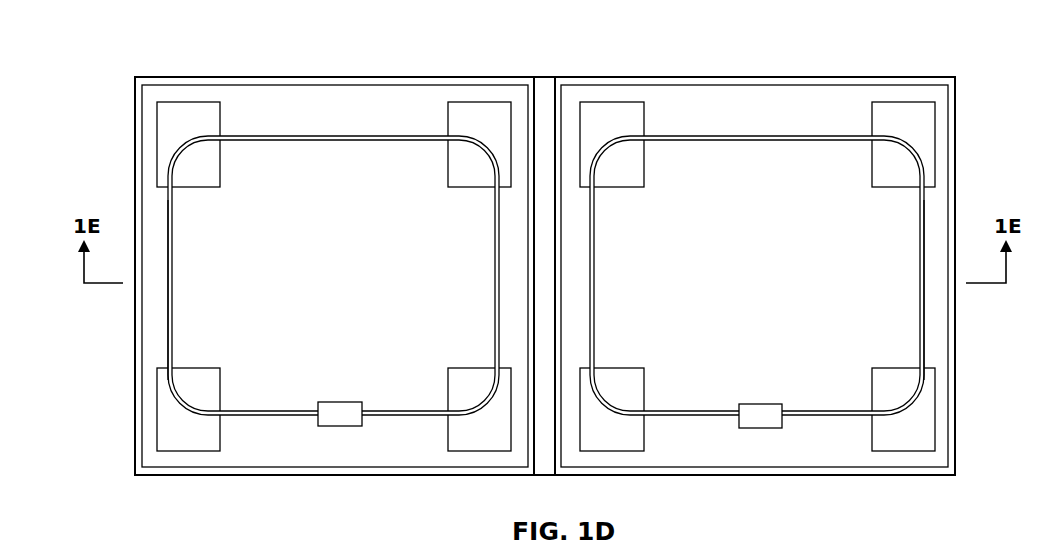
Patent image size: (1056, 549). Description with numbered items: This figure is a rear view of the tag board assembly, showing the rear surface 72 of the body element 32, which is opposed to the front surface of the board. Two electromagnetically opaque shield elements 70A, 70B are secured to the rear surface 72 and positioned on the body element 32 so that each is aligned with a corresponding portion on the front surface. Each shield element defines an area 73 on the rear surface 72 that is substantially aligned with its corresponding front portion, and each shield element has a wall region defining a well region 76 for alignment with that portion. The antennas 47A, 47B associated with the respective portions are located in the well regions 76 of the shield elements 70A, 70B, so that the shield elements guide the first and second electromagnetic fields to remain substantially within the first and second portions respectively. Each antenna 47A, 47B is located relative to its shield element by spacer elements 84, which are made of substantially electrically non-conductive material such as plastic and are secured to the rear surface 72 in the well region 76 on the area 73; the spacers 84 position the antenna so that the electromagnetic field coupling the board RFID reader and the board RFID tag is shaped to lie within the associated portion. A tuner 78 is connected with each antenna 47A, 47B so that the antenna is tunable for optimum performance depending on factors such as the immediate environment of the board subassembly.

The body element 32 is at (543, 477).
The rear surface 72 is at (543, 92).
The shield element 70A is at (296, 77).
The shield element 70B is at (866, 77).
The spacer element 84 is at (201, 378).
The antenna 47A is at (173, 246).
The antenna 47B is at (595, 270).
The well region 76 is at (188, 306).
The tuner 78 is at (336, 410).
The area 73 is at (778, 325).